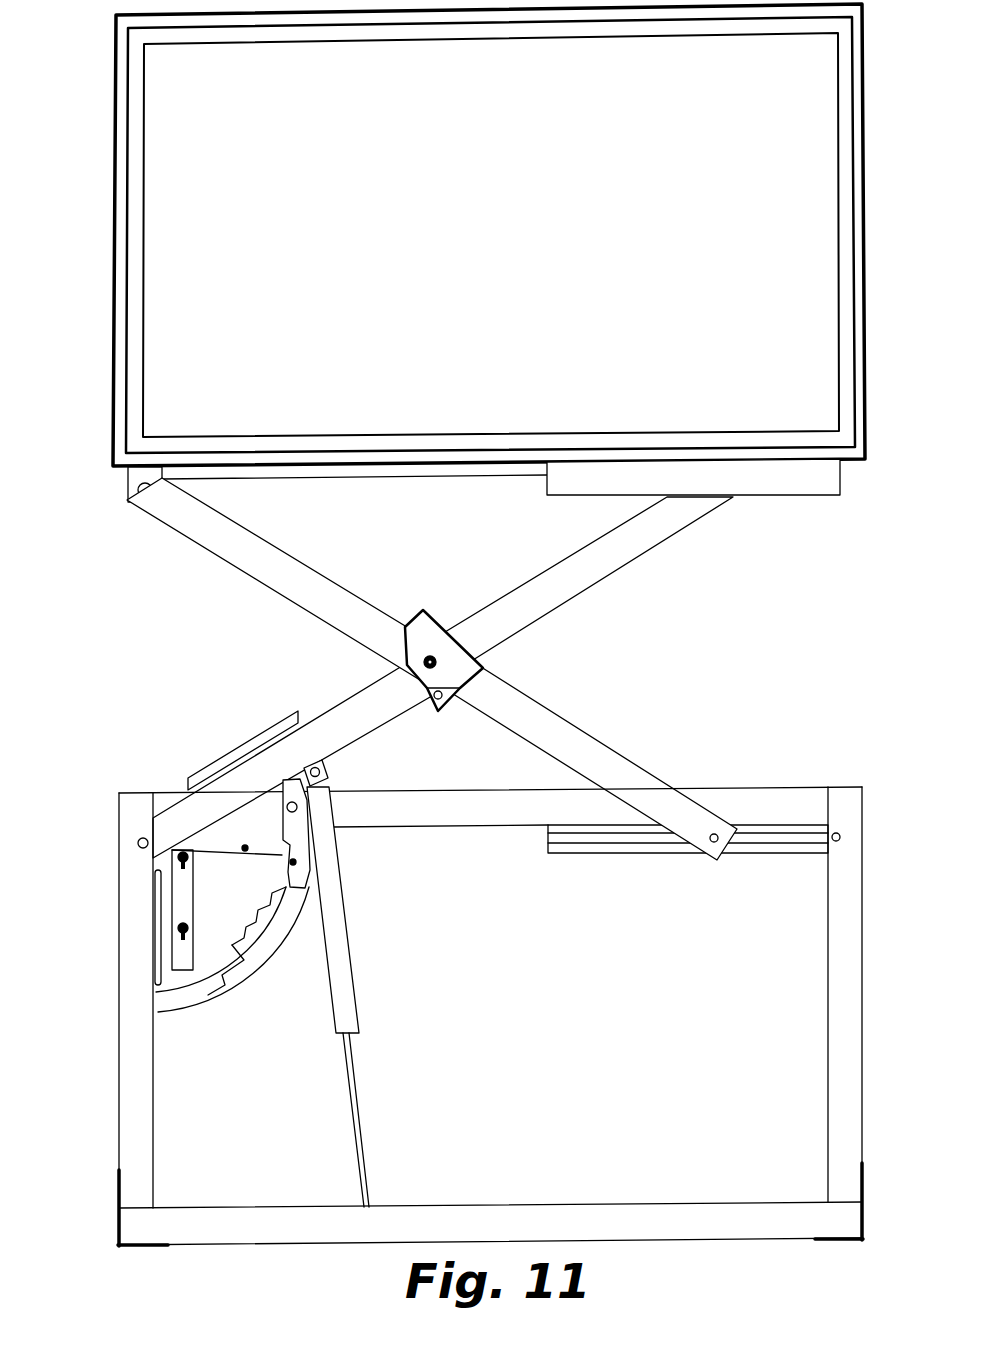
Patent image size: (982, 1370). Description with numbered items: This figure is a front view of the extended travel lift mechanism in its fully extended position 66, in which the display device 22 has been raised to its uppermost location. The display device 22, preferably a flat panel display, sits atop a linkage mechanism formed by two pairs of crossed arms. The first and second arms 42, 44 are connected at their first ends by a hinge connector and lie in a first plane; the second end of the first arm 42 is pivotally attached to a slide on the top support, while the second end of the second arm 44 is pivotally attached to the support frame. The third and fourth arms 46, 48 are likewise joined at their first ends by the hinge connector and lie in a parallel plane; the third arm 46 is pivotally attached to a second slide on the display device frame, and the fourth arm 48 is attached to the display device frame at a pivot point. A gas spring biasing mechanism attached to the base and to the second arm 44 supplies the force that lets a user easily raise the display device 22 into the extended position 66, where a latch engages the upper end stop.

The display device 22 is at (494, 245).
The first arm 42 is at (551, 724).
The second arm 44 is at (341, 705).
The third arm 46 is at (627, 553).
The fourth arm 48 is at (314, 575).
The extended position 66 is at (491, 659).